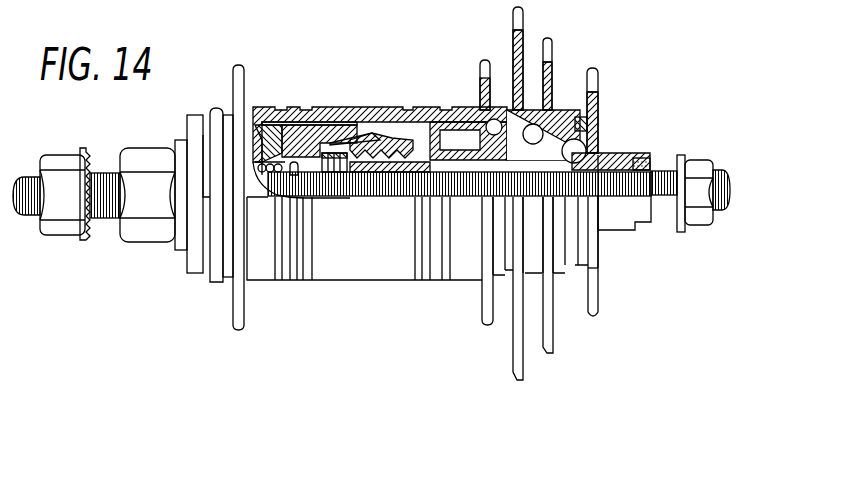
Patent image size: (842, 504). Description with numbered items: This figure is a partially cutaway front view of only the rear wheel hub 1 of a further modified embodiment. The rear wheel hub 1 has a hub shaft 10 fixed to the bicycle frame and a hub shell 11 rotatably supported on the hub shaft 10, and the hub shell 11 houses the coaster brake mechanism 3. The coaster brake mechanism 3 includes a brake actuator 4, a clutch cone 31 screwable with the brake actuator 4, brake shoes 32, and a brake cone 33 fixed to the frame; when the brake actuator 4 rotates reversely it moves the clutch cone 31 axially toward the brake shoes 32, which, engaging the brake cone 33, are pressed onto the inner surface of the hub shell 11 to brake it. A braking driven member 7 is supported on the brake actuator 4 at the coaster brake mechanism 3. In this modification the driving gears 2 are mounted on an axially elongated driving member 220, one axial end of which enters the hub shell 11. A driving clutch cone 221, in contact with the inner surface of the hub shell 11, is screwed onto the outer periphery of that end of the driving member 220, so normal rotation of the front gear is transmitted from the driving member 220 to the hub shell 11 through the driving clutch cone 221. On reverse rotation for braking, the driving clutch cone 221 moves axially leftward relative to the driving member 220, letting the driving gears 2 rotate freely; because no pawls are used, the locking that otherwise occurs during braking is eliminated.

The rear wheel hub 1 is at (403, 107).
The driving gears 2 is at (548, 38).
The coaster brake mechanism 3 is at (292, 118).
The brake actuator 4 is at (577, 117).
The braking driven member 7 is at (595, 103).
The hub shaft 10 is at (660, 168).
The hub shell 11 is at (352, 116).
The clutch cone 31 is at (382, 143).
The brake shoes 32 is at (318, 122).
The brake cone 33 is at (267, 112).
The driving member 220 is at (507, 110).
The driving clutch cone 221 is at (438, 127).